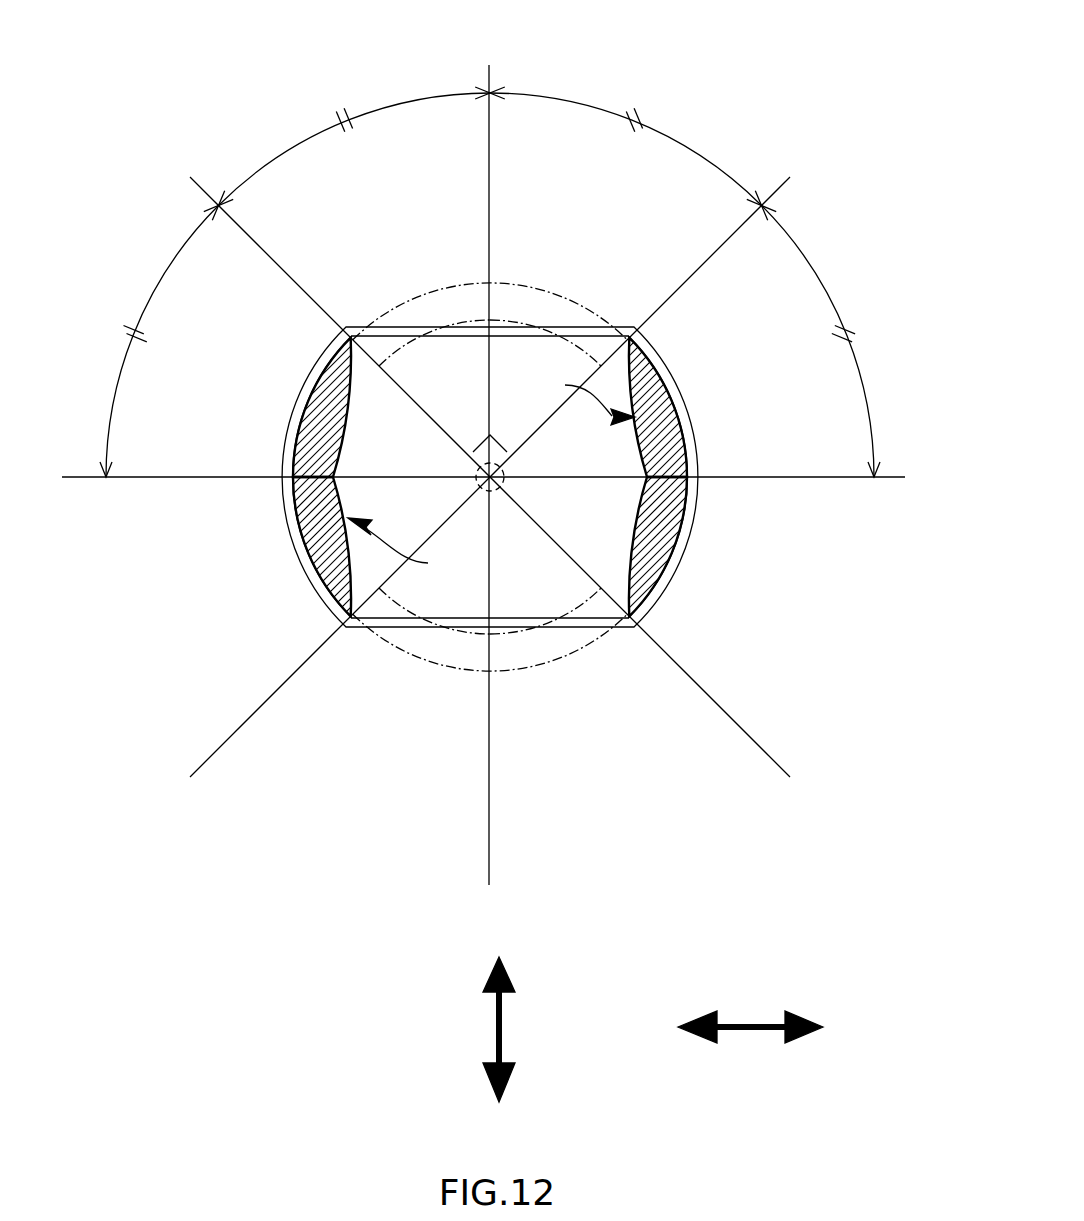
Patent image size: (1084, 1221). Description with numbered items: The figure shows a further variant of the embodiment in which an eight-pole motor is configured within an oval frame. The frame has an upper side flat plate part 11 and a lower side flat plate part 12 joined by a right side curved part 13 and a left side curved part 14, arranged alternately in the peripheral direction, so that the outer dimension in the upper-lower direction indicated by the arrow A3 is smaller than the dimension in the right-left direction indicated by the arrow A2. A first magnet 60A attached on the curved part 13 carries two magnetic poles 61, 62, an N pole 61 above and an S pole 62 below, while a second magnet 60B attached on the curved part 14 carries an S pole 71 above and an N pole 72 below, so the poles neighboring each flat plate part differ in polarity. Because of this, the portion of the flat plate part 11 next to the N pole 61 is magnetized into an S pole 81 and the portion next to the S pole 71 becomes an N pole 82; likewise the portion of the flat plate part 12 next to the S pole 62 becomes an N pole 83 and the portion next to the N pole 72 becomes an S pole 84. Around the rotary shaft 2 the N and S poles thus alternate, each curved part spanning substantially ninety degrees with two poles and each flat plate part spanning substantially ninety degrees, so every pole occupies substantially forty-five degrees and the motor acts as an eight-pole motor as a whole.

The rotary shaft 2 is at (473, 472).
The upper side flat plate part 11 is at (407, 325).
The lower side flat plate part 12 is at (473, 632).
The right side curved part 13 is at (295, 473).
The left side curved part 14 is at (695, 488).
The first magnet 60A is at (415, 549).
The second magnet 60B is at (569, 396).
The magnetic pole (N pole) 61 is at (292, 422).
The magnetic pole (S pole) 62 is at (292, 532).
The magnetic pole (S pole) 71 is at (690, 422).
The magnetic pole (N pole) 72 is at (690, 532).
The magnetic pole (S pole) 81 is at (437, 330).
The magnetic pole (N pole) 82 is at (552, 330).
The magnetic pole (N pole) 83 is at (440, 628).
The magnetic pole (S pole) 84 is at (570, 628).
The arrow indicating right-left direction A2 is at (772, 1023).
The arrow indicating upper-lower direction A3 is at (497, 1022).